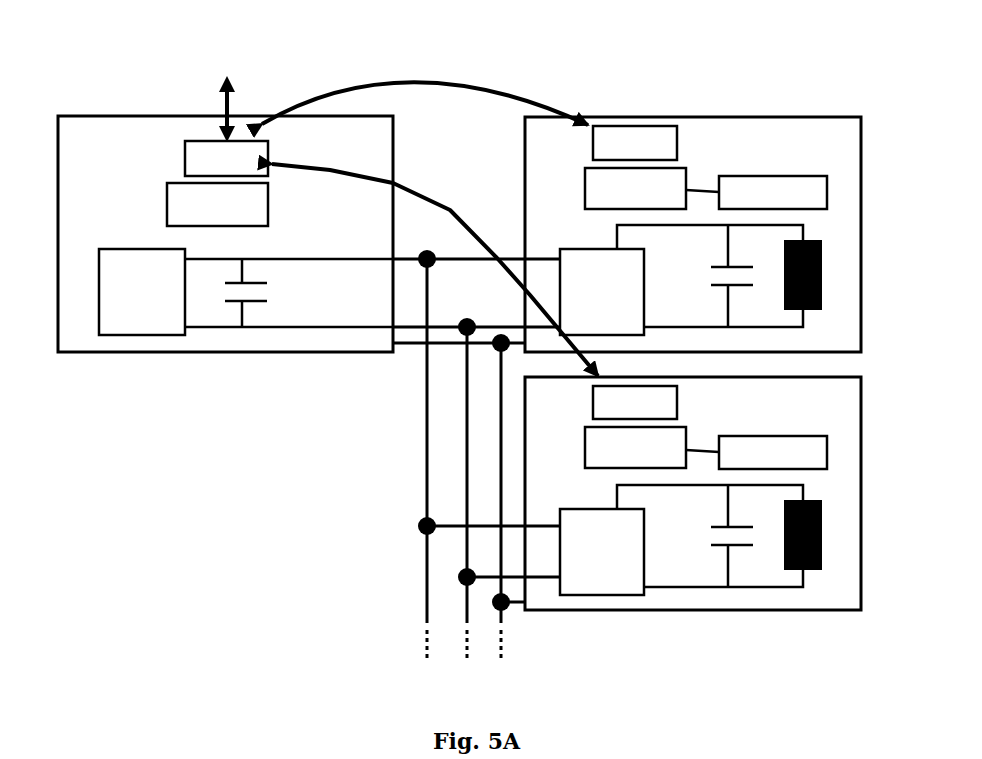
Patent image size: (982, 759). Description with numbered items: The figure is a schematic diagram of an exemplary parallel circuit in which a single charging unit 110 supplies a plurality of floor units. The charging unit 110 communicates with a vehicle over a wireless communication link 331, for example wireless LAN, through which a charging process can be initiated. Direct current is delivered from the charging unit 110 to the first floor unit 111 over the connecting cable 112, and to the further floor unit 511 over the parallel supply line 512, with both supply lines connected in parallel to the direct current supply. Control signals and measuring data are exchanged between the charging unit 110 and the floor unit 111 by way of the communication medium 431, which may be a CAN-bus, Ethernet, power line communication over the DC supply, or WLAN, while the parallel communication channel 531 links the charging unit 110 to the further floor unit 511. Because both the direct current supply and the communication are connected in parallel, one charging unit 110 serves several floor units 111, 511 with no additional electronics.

The charging unit 110 is at (131, 116).
The floor unit 111 is at (738, 116).
The connecting cable 112 is at (411, 341).
The wireless communication link 331 is at (223, 101).
The communication medium 431 is at (466, 92).
The communication channel 531 is at (450, 208).
The floor unit 511 is at (718, 612).
The supply line 512 is at (413, 432).